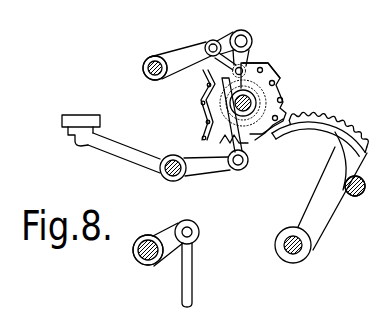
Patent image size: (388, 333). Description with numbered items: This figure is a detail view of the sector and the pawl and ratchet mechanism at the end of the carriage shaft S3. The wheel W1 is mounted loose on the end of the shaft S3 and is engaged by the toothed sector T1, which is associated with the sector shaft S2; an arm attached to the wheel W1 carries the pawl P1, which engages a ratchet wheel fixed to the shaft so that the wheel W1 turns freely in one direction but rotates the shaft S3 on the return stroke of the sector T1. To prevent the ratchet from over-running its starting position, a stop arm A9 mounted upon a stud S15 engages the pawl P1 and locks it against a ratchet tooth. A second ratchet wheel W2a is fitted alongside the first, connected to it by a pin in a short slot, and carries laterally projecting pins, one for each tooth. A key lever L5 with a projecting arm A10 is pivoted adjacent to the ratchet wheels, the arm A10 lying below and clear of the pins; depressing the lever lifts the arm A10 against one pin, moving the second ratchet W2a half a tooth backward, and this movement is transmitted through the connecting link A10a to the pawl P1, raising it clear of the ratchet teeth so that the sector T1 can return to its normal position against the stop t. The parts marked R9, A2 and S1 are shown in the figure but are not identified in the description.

The stop arm A9 is at (195, 57).
The wheel W1 is at (264, 65).
The second ratchet wheel W2a is at (284, 94).
The stud S15 is at (148, 79).
The pawl P1 is at (219, 70).
The carriage shaft S3 is at (201, 112).
The connecting rod or link A10a is at (220, 143).
The key lever L5 is at (130, 155).
The projecting arm A10 is at (211, 165).
The toothed rack segment R9 is at (292, 138).
The toothed sector T1 is at (332, 193).
The sector shaft S2 is at (289, 237).
The stop t is at (356, 194).
The arm A2 is at (173, 237).
The shaft S1 is at (147, 264).